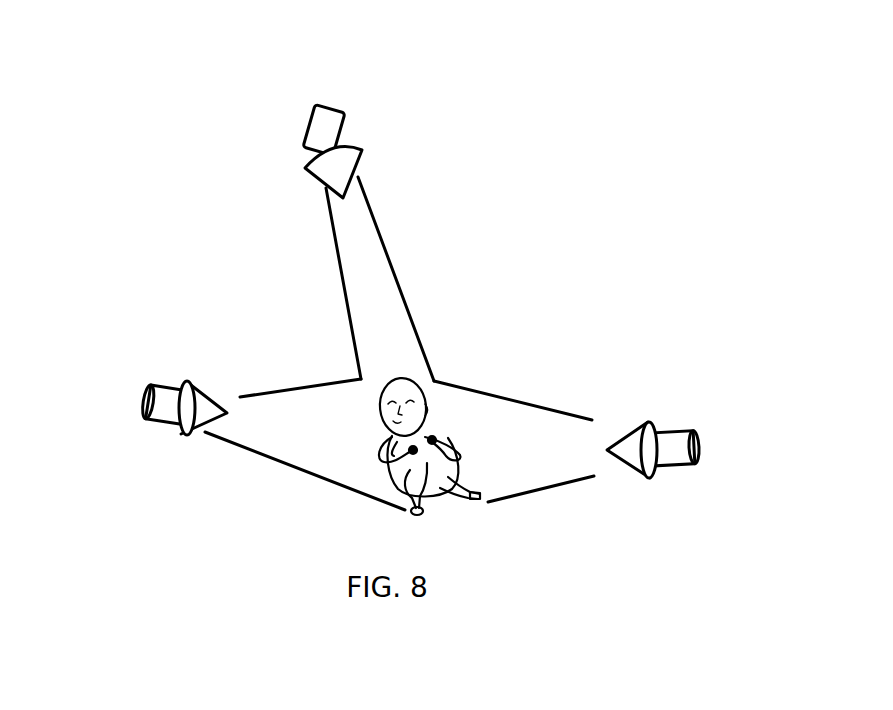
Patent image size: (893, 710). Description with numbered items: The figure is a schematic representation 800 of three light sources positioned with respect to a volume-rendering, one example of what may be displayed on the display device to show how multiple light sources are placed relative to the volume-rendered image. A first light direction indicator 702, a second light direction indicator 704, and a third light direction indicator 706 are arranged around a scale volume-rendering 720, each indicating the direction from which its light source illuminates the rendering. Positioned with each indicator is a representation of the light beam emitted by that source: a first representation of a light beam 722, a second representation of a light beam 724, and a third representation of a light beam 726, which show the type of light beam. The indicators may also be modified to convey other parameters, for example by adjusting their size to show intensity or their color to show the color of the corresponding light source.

The three-camera imaging setup 800 is at (452, 77).
The first light direction indicator 702 is at (144, 400).
The second light direction indicator 704 is at (700, 445).
The third light direction indicator 706 is at (336, 136).
The scale volume-rendering 720 is at (379, 404).
The first representation of a light beam 722 is at (310, 453).
The second representation of a light beam 724 is at (377, 275).
The third representation of a light beam 726 is at (550, 472).